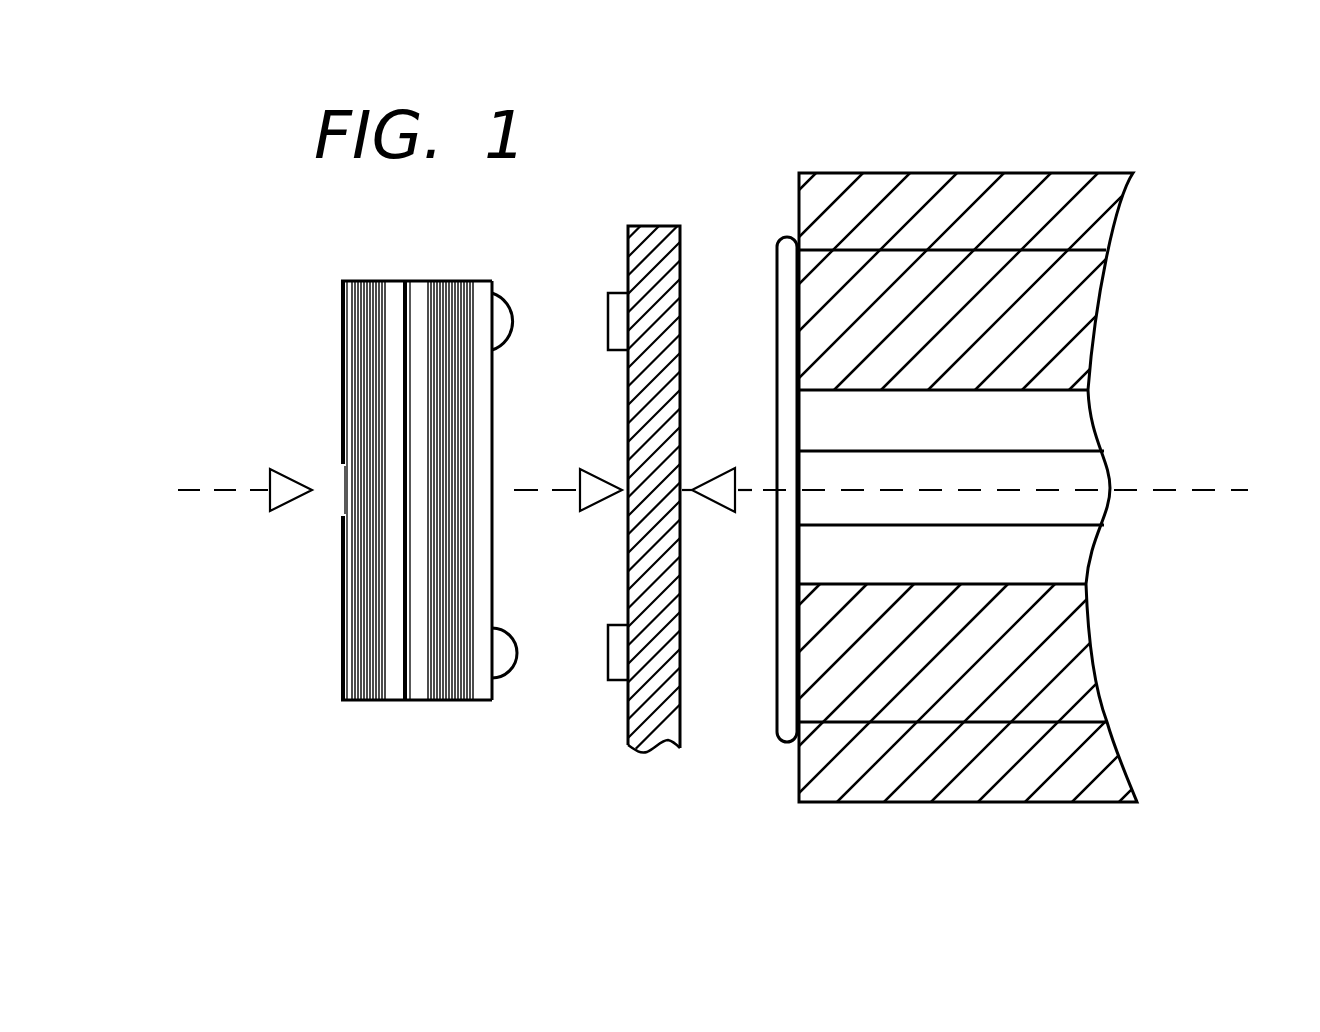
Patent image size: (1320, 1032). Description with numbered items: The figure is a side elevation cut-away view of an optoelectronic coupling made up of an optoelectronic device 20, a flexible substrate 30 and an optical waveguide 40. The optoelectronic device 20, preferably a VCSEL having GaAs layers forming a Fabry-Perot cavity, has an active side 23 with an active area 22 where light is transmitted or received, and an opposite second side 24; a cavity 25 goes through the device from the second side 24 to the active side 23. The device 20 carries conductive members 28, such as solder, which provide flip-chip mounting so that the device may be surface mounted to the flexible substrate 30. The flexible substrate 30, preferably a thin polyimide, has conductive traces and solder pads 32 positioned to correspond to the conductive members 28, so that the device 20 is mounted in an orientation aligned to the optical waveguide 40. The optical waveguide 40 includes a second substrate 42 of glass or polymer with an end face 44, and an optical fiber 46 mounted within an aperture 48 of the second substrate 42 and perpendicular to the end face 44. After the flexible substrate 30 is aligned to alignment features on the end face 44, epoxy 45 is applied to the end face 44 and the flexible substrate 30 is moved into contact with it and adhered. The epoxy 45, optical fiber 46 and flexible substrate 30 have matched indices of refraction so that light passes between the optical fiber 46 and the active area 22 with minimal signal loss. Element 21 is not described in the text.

The optoelectronic device 20 is at (393, 280).
The first lens element 21 is at (365, 700).
The active area 22 is at (497, 523).
The active side 23 is at (493, 291).
The second side 24 is at (345, 630).
The cavity 25 is at (341, 478).
The conductive members 28 is at (503, 657).
The flexible substrate 30 is at (648, 225).
The solder pads 32 is at (615, 652).
The optical waveguide 40 is at (1012, 470).
The second substrate 42 is at (863, 190).
The end face 44 is at (799, 780).
The epoxy 45 is at (790, 323).
The optical fiber 46 is at (1083, 469).
The aperture 48 is at (1064, 580).